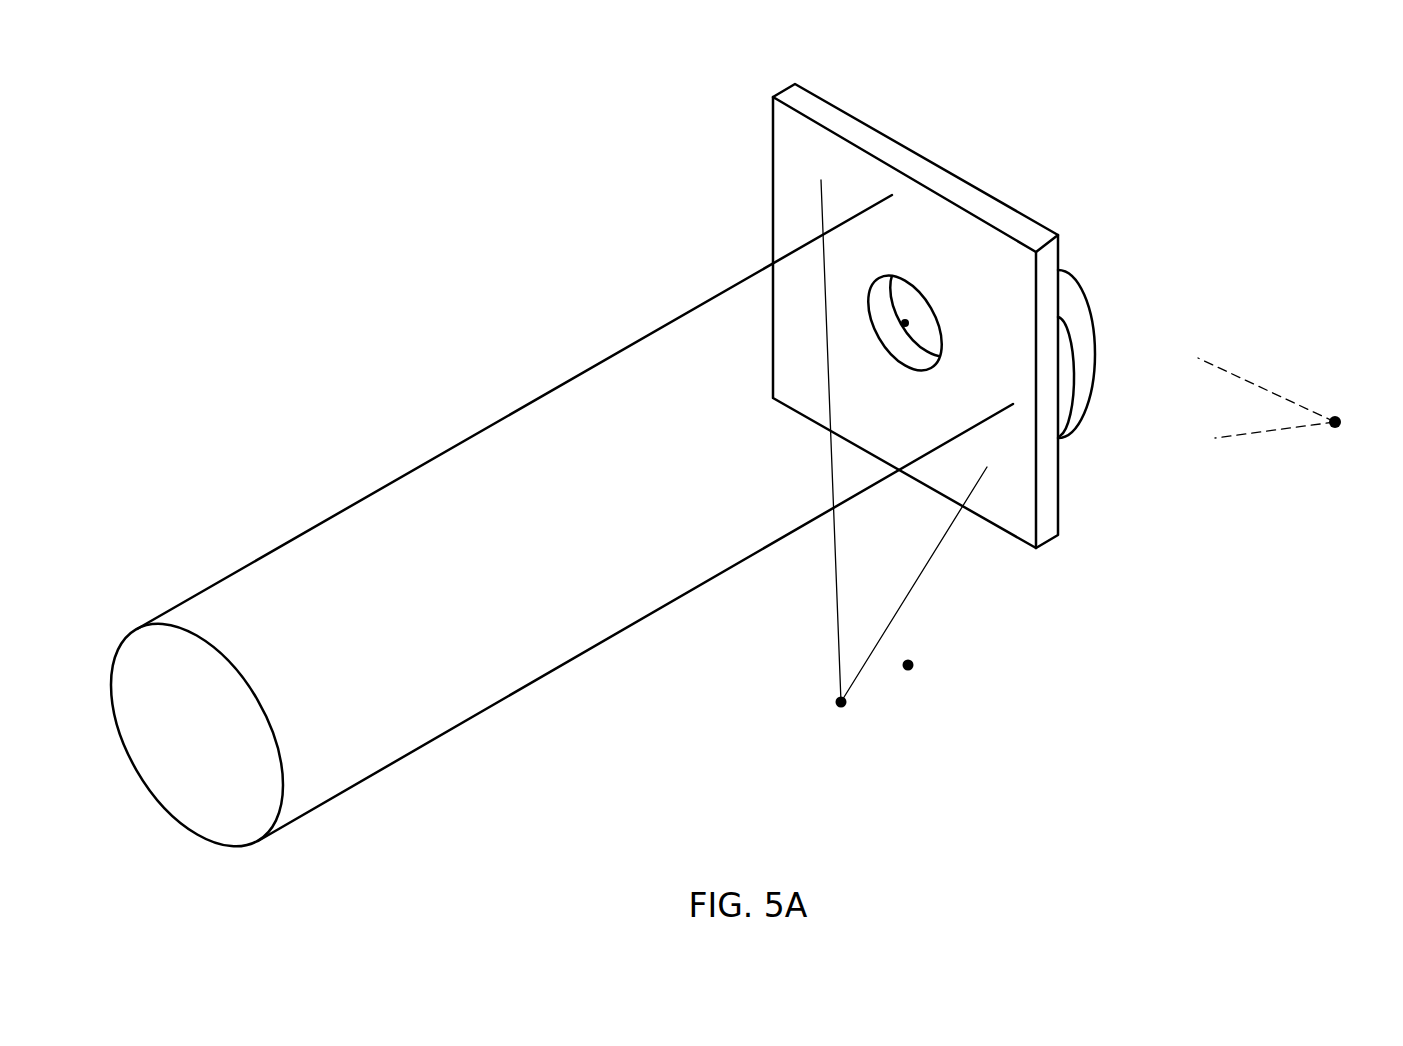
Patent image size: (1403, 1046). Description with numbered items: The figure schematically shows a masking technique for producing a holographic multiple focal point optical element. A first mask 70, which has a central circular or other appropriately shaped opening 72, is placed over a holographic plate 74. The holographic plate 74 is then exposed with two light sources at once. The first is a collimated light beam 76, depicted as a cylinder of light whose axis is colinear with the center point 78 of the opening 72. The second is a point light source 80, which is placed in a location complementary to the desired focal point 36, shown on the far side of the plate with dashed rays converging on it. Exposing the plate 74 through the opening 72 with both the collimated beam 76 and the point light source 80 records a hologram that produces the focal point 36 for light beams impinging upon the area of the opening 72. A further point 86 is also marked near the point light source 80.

The focal point 36 is at (1335, 422).
The first mask 70 is at (796, 134).
The opening 72 is at (920, 317).
The holographic plate 74 is at (1080, 332).
The first collimated light beam 76 is at (487, 640).
The center point 78 is at (905, 325).
The point light source 80 is at (841, 702).
The point 86 is at (908, 665).